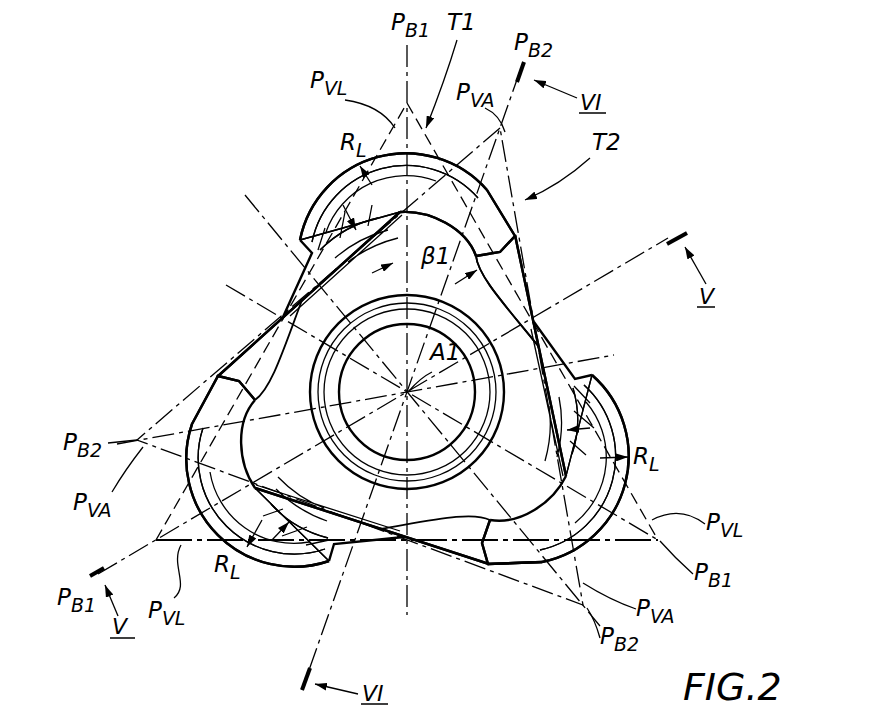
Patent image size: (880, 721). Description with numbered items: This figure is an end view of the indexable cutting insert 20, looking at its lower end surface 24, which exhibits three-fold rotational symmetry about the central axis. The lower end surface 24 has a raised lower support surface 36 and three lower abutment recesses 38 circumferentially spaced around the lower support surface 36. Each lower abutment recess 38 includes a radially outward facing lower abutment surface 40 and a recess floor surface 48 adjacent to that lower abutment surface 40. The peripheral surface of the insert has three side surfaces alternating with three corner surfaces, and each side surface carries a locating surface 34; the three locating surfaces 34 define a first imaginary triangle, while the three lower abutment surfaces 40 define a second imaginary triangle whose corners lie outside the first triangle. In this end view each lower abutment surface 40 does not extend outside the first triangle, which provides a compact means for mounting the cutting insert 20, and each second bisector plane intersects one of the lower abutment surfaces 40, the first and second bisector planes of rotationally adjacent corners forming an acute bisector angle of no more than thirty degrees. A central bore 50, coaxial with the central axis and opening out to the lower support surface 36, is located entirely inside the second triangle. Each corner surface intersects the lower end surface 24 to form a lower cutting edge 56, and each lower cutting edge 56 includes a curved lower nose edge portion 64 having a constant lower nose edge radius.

The cutting insert 20 is at (215, 333).
The lower end surface 24 is at (522, 254).
The locating surface 34 is at (280, 293).
The lower support surface 36 is at (488, 300).
The lower abutment recess 38 is at (350, 212).
The lower abutment surface 40 is at (328, 232).
The recess floor surface 48 is at (327, 220).
The central bore 50 is at (525, 566).
The lower cutting edge 56 is at (397, 150).
The lower nose edge portion 64 is at (517, 190).